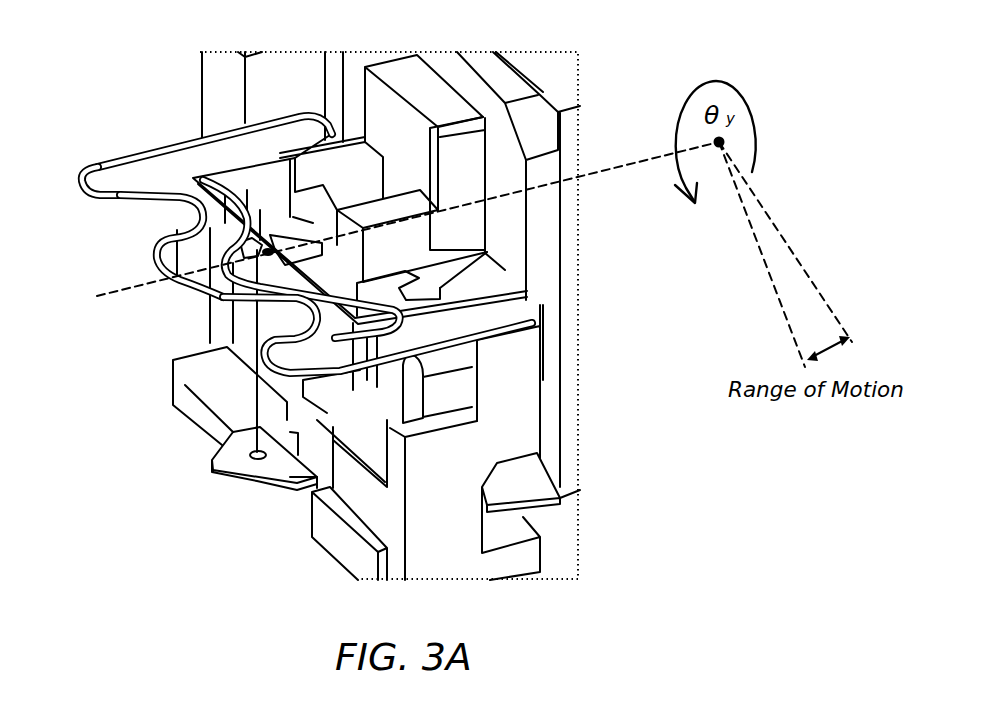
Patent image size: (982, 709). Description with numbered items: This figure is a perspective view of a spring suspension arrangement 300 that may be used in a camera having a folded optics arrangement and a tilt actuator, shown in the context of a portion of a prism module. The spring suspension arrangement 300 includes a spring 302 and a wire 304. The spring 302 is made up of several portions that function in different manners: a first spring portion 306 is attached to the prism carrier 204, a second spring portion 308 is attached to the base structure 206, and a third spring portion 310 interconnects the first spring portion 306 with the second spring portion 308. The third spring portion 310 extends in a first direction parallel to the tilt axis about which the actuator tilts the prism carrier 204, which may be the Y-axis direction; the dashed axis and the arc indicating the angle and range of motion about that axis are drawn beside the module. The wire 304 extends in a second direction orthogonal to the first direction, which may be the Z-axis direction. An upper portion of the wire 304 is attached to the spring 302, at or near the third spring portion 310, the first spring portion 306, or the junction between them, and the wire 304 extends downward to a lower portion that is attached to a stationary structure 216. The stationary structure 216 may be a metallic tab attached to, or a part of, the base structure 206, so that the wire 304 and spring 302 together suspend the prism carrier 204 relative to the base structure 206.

The spring suspension arrangement 300 is at (116, 54).
The spring 302 is at (279, 239).
The wire 304 is at (243, 389).
The first spring portion 306 is at (167, 150).
The second spring portion 308 is at (87, 172).
The third spring portion 310 is at (193, 293).
The prism carrier 204 is at (487, 281).
The base structure 206 is at (505, 354).
The stationary structure 216 is at (233, 465).